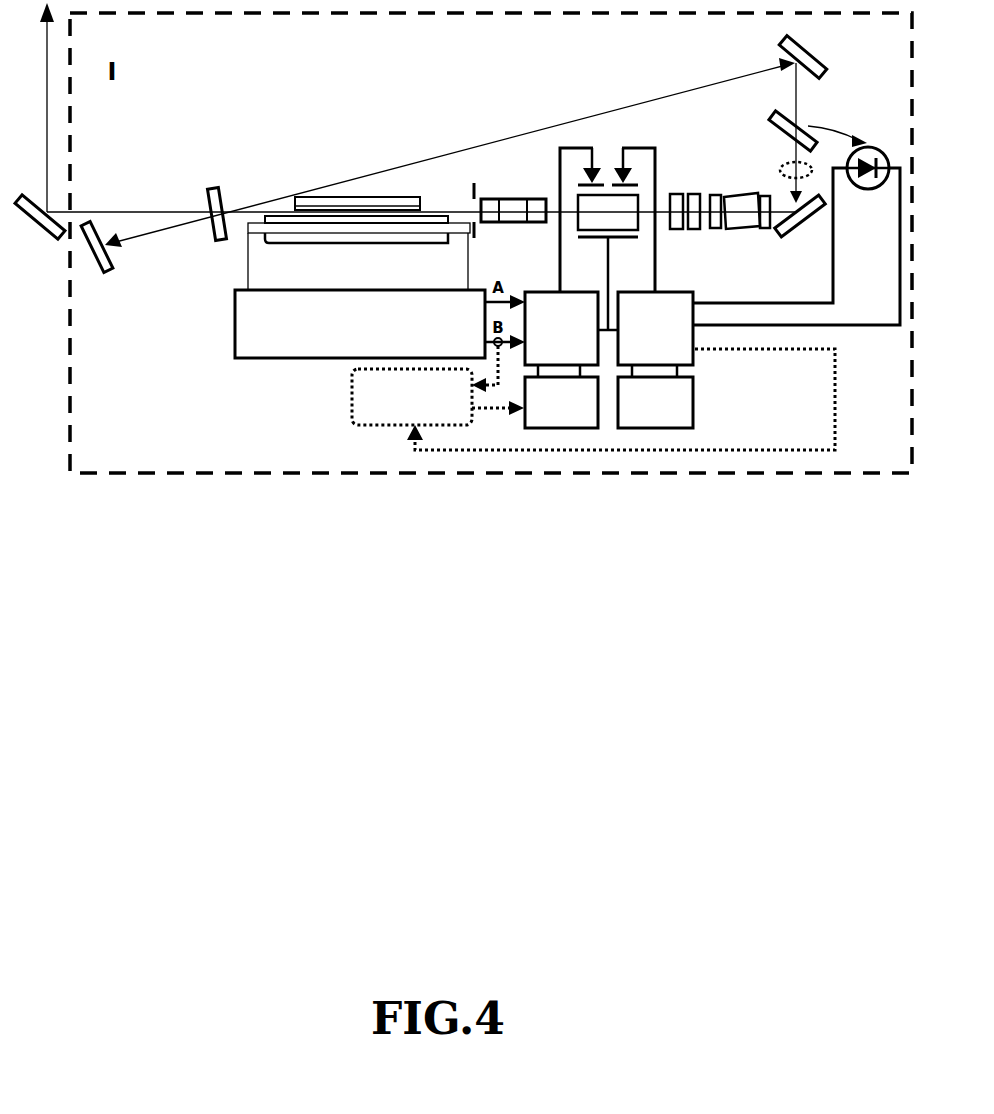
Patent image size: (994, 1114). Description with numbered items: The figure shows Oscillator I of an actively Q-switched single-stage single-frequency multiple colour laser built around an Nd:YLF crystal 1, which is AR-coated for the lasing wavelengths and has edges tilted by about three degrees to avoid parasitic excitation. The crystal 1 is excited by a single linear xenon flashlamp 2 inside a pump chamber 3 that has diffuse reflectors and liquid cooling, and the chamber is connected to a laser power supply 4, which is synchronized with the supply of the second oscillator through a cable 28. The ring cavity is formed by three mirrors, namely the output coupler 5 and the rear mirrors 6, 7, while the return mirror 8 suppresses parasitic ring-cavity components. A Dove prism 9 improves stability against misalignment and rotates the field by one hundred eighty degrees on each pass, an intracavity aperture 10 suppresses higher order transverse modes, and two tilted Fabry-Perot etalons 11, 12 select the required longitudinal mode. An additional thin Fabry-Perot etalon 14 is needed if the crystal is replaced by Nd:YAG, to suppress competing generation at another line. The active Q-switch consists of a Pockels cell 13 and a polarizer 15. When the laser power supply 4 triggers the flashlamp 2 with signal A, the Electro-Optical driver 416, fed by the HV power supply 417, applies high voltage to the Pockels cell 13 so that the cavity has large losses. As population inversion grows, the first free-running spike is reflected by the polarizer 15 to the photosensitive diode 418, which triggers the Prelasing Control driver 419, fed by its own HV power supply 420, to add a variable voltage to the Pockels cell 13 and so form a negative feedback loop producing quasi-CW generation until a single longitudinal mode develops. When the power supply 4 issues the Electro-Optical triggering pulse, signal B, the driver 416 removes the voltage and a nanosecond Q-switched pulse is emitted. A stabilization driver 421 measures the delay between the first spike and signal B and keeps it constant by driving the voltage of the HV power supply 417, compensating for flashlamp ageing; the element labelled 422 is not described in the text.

The Nd:YLF crystal 1 is at (433, 207).
The linear xenon flashlamp 2 is at (252, 230).
The pump chamber 3 is at (357, 189).
The laser power supply 4 is at (360, 295).
The output coupler 5 is at (219, 204).
The rear mirror 6 is at (803, 70).
The rear mirror 7 is at (800, 222).
The return mirror 8 is at (97, 258).
The Dove prism 9 is at (513, 192).
The intracavity aperture 10 is at (470, 194).
The tilted Fabry-Perot etalon 11 is at (740, 194).
The tilted Fabry-Perot etalon 12 is at (685, 194).
The Pockels cell 13 is at (607, 239).
The thin Fabry-Perot etalon 14 is at (783, 164).
The polarizer 15 is at (805, 124).
The cable 28 is at (170, 307).
The Electro-Optical driver 416 is at (571, 328).
The HV power supply 417 is at (561, 396).
The photosensitive diode 418 is at (796, 236).
The Prelasing Control driver 419 is at (655, 328).
The HV power supply 420 is at (655, 396).
The stabilization driver 421 is at (593, 398).
The output mirror 422 is at (40, 225).